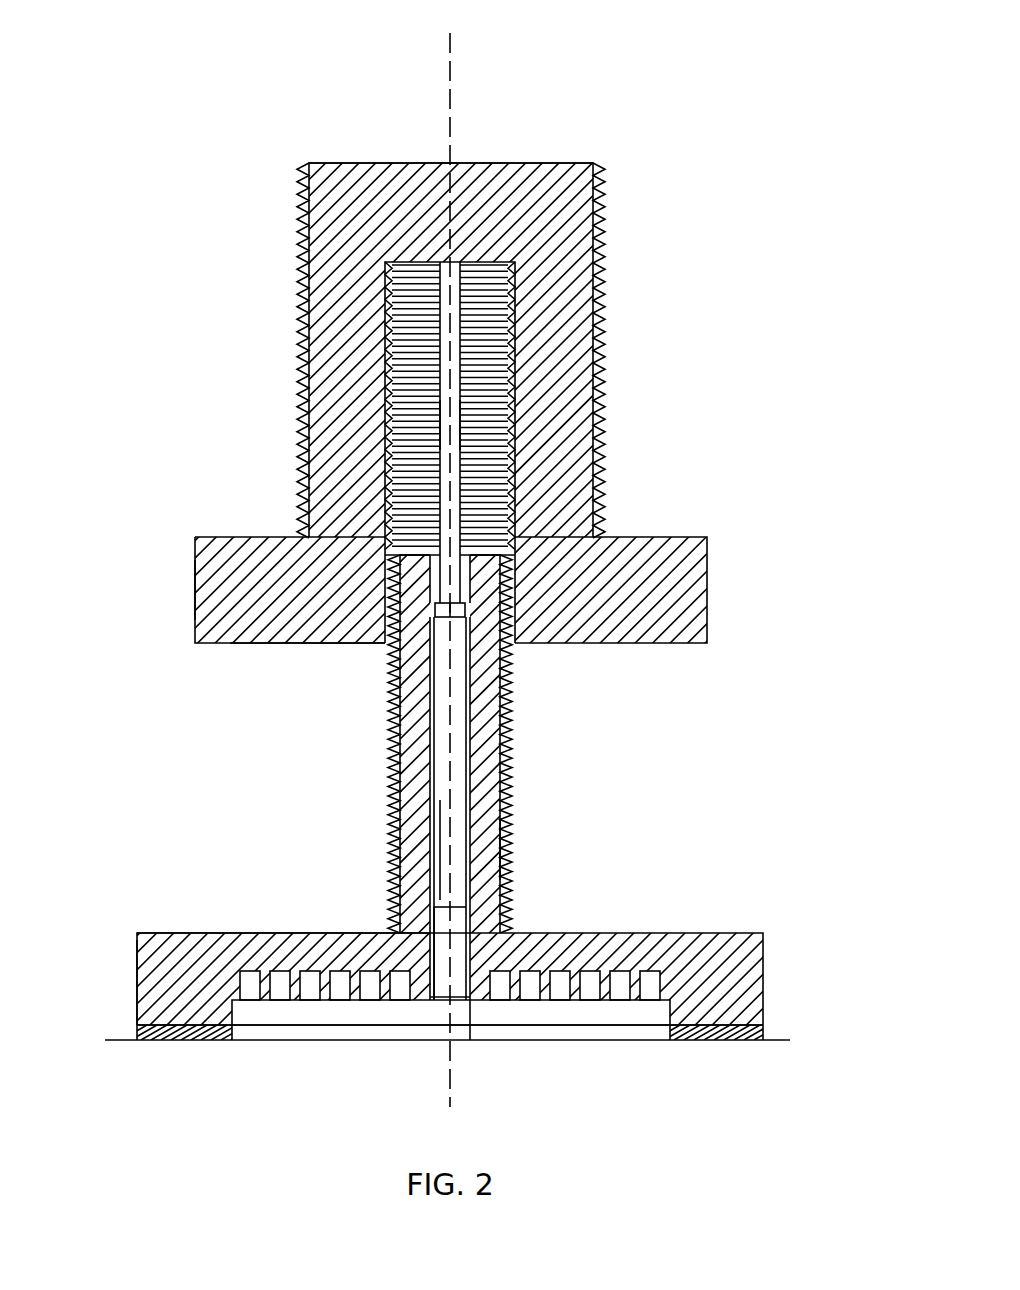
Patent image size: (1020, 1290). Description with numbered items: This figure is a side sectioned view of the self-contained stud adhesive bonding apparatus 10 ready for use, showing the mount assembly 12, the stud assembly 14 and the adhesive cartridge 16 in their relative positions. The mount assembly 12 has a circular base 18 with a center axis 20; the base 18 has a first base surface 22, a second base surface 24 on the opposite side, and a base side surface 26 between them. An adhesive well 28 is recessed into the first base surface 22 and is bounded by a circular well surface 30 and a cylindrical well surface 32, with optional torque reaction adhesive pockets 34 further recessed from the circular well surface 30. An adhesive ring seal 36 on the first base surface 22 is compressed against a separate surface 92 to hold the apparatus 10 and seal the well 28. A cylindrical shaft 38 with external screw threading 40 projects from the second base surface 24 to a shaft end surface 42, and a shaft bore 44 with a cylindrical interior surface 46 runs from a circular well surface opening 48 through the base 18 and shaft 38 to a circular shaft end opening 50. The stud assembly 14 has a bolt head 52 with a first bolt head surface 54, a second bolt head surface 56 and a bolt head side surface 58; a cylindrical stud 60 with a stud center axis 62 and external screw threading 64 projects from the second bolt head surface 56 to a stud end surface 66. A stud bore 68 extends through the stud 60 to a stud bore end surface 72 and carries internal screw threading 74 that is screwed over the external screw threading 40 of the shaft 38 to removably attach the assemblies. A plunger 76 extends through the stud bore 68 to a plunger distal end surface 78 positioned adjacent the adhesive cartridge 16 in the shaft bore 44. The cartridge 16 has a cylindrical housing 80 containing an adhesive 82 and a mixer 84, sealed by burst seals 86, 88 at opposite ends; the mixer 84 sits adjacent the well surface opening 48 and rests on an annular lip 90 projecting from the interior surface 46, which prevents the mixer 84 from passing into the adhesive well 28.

The self-contained stud adhesive bonding apparatus 10 is at (757, 398).
The mount assembly 12 is at (774, 918).
The stud assembly 14 is at (736, 210).
The adhesive cartridge 16 is at (433, 791).
The circular base 18 is at (137, 973).
The center axis 20 is at (450, 50).
The first base surface 22 is at (178, 1026).
The second base surface 24 is at (170, 933).
The base side surface 26 is at (137, 1002).
The adhesive well 28 is at (350, 1014).
The circular well surface 30 is at (577, 1001).
The cylindrical well surface 32 is at (668, 1018).
The torque reaction adhesive pockets 34 is at (534, 1005).
The adhesive ring seal 36 is at (766, 1031).
The cylindrical shaft 38 is at (503, 852).
The external screw threading 40 is at (503, 793).
The shaft end surface 42 is at (517, 508).
The shaft bore 44 is at (468, 551).
The cylindrical interior surface 46 is at (464, 604).
The circular well surface opening 48 is at (430, 1007).
The circular shaft end opening 50 is at (431, 551).
The bolt head 52 is at (195, 577).
The first bolt head surface 54 is at (212, 643).
The second bolt head surface 56 is at (210, 537).
The bolt head side surface 58 is at (195, 622).
The cylindrical stud 60 is at (306, 348).
The stud center axis 62 is at (448, 112).
The external screw threading 64 is at (385, 292).
The stud end surface 66 is at (367, 163).
The stud bore 68 is at (482, 260).
The stud bore end surface 72 is at (420, 291).
The internal screw threading 74 is at (478, 355).
The plunger 76 is at (453, 303).
The plunger distal end surface 78 is at (441, 625).
The cylindrical housing 80 is at (433, 823).
The adhesive 82 is at (442, 846).
The mixer 84 is at (443, 927).
The burst seal 86 is at (436, 604).
The burst seal 88 is at (466, 920).
The annular lip 90 is at (468, 1002).
The separate surface 92 is at (122, 1030).